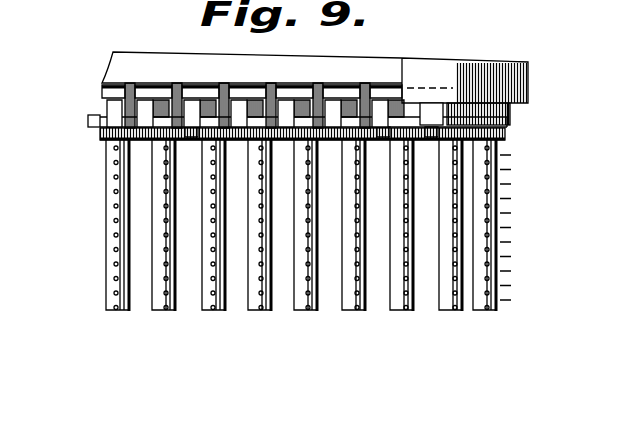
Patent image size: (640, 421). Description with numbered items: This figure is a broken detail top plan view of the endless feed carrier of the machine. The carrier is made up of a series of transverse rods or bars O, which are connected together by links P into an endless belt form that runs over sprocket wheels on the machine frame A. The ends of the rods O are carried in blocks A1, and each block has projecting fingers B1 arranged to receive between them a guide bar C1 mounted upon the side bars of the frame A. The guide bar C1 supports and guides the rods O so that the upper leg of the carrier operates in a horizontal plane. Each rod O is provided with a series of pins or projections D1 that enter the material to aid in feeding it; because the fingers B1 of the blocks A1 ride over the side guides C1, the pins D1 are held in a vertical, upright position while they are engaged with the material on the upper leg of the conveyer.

The machine frame A is at (385, 57).
The projecting fingers B1 is at (127, 85).
The guide bar C1 is at (146, 87).
The blocks A1 is at (267, 110).
The links P is at (137, 130).
The pins D1 is at (528, 183).
The transverse rods O is at (160, 240).